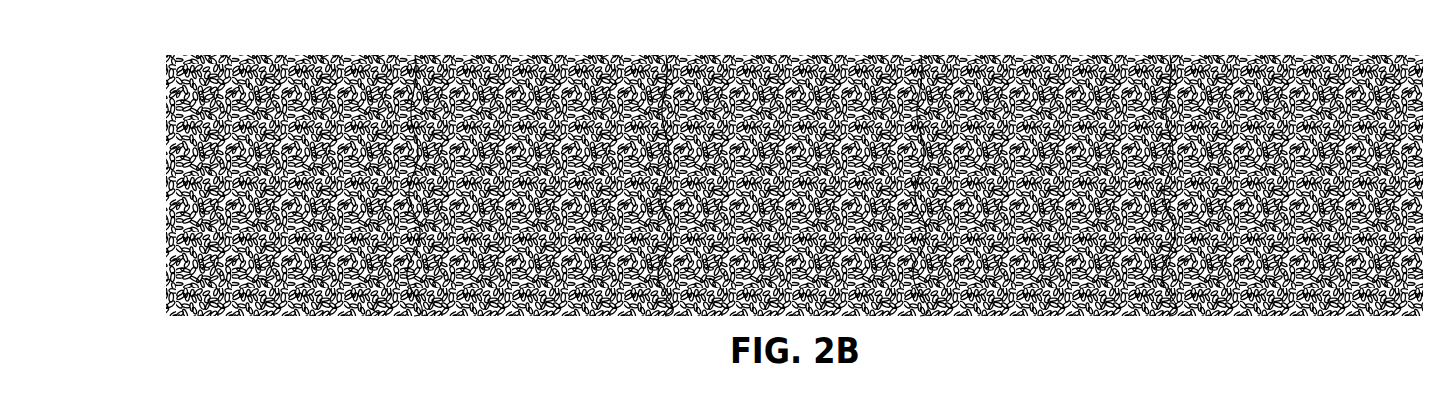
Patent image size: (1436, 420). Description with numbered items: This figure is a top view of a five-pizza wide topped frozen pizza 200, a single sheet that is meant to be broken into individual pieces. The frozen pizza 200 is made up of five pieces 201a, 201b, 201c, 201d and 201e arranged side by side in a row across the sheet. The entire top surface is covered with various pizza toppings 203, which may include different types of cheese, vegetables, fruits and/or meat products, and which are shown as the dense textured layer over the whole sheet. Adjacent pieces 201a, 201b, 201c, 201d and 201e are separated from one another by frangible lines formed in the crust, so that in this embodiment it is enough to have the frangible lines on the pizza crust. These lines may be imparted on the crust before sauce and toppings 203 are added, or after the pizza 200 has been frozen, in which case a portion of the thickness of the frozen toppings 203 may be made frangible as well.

The five-pizza wide topped frozen pizza 200 is at (794, 225).
The piece 201a is at (303, 185).
The piece 201b is at (554, 185).
The piece 201c is at (805, 185).
The piece 201d is at (1055, 185).
The piece 201e is at (1301, 185).
The pizza toppings 203 is at (370, 290).